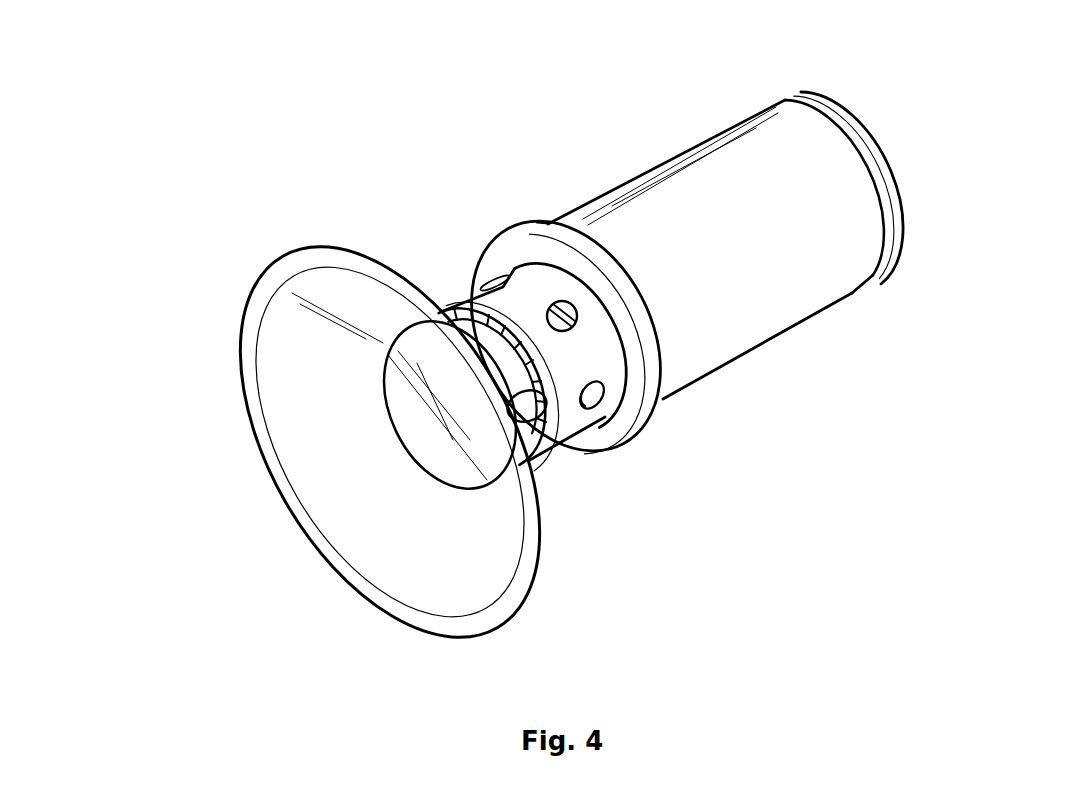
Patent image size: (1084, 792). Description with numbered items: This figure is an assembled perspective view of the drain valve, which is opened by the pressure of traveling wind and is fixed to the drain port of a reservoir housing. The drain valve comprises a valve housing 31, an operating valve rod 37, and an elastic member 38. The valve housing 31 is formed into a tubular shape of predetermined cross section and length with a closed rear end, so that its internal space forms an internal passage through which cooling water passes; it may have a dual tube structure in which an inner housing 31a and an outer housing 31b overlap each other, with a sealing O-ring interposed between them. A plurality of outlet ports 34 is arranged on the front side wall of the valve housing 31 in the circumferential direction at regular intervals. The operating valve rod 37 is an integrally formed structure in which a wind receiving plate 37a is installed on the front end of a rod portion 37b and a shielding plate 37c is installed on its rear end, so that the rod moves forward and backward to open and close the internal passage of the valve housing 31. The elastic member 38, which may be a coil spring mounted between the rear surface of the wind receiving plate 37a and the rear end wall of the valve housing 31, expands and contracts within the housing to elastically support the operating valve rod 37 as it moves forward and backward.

The valve housing 31 is at (605, 280).
The inner housing 31a is at (511, 290).
The outer housing 31b is at (645, 203).
The outlet ports 34 is at (568, 307).
The operating valve rod 37 is at (236, 360).
The wind receiving plate 37a is at (283, 330).
The rod portion 37b is at (512, 373).
The shielding plate 37c is at (868, 136).
The elastic member 38 is at (482, 328).